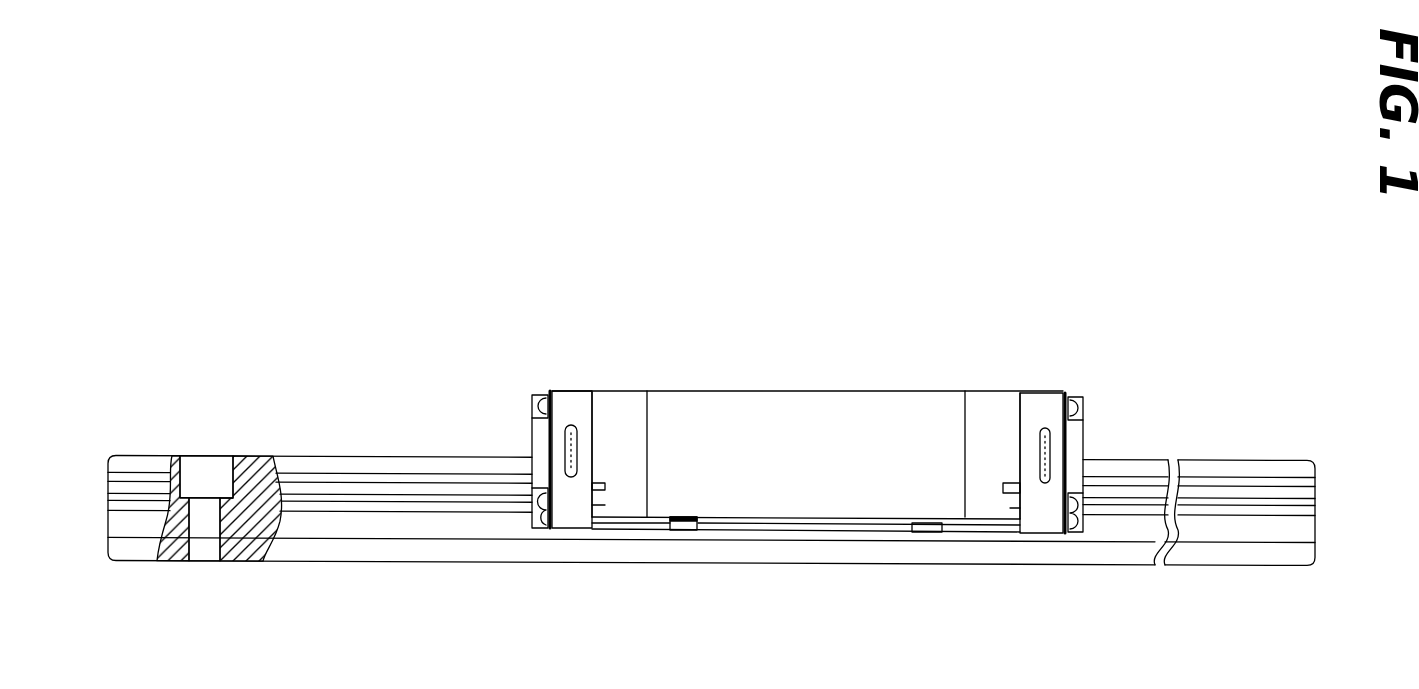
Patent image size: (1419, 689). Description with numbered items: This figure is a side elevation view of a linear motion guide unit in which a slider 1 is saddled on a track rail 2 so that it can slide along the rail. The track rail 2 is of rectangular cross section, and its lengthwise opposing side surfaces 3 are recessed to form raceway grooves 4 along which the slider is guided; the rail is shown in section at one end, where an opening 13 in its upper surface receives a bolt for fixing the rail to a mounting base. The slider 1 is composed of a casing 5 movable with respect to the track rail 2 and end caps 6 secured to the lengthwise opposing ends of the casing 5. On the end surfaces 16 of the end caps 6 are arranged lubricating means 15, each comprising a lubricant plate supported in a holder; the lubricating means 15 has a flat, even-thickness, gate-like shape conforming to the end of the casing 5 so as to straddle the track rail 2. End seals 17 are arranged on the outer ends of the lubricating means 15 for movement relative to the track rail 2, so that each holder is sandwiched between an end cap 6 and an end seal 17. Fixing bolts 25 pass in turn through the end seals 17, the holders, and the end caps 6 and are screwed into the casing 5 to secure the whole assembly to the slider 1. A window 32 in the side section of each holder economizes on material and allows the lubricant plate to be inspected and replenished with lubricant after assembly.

The slider 1 is at (918, 392).
The track rail 2 is at (330, 465).
The lengthwise side surfaces 3 is at (378, 528).
The raceway grooves 4 is at (400, 483).
The casing 5 is at (790, 415).
The end caps 6 is at (618, 420).
The openings 13 is at (217, 530).
The lubricating means 15 is at (572, 508).
The end surfaces 16 is at (592, 440).
The end seals 17 is at (540, 442).
The fixing bolts 25 is at (540, 400).
The window 32 is at (568, 425).